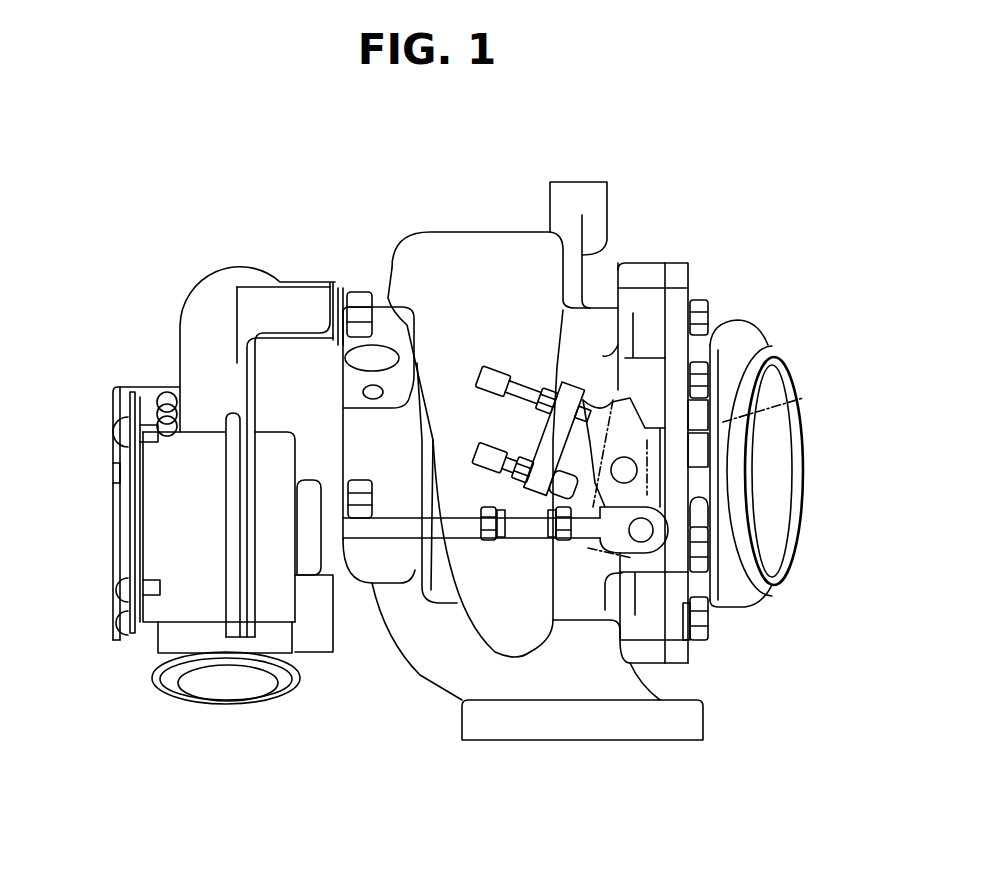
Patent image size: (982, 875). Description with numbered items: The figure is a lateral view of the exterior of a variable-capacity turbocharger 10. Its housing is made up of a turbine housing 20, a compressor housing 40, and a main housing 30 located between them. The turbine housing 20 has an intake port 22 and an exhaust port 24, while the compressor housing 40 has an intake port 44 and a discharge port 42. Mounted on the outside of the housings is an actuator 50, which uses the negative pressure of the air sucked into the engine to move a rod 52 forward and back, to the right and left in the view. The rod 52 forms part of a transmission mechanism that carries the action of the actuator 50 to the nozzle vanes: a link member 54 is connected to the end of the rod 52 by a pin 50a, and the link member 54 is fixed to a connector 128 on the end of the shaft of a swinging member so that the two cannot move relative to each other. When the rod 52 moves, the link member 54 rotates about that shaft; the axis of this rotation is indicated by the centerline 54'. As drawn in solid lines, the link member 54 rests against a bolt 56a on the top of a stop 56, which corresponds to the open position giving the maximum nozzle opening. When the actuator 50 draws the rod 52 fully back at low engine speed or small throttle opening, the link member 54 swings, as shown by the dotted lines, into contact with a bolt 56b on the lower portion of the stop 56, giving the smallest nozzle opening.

The variable-capacity turbocharger 10 is at (512, 162).
The turbine housing 20 is at (468, 224).
The intake port 22 is at (647, 727).
The exhaust port 24 is at (788, 452).
The main housing 30 is at (372, 272).
The compressor housing 40 is at (250, 250).
The discharge port 42 is at (232, 688).
The intake port 44 is at (113, 398).
The actuator 50 is at (185, 602).
The pin 50a is at (644, 535).
The rod 52 is at (383, 528).
The link member 54 is at (729, 406).
The lever pivot axis 54' is at (726, 471).
The stop 56 is at (545, 360).
The bolt 56a is at (500, 378).
The bolt 56b is at (493, 465).
The connector 128 is at (630, 472).